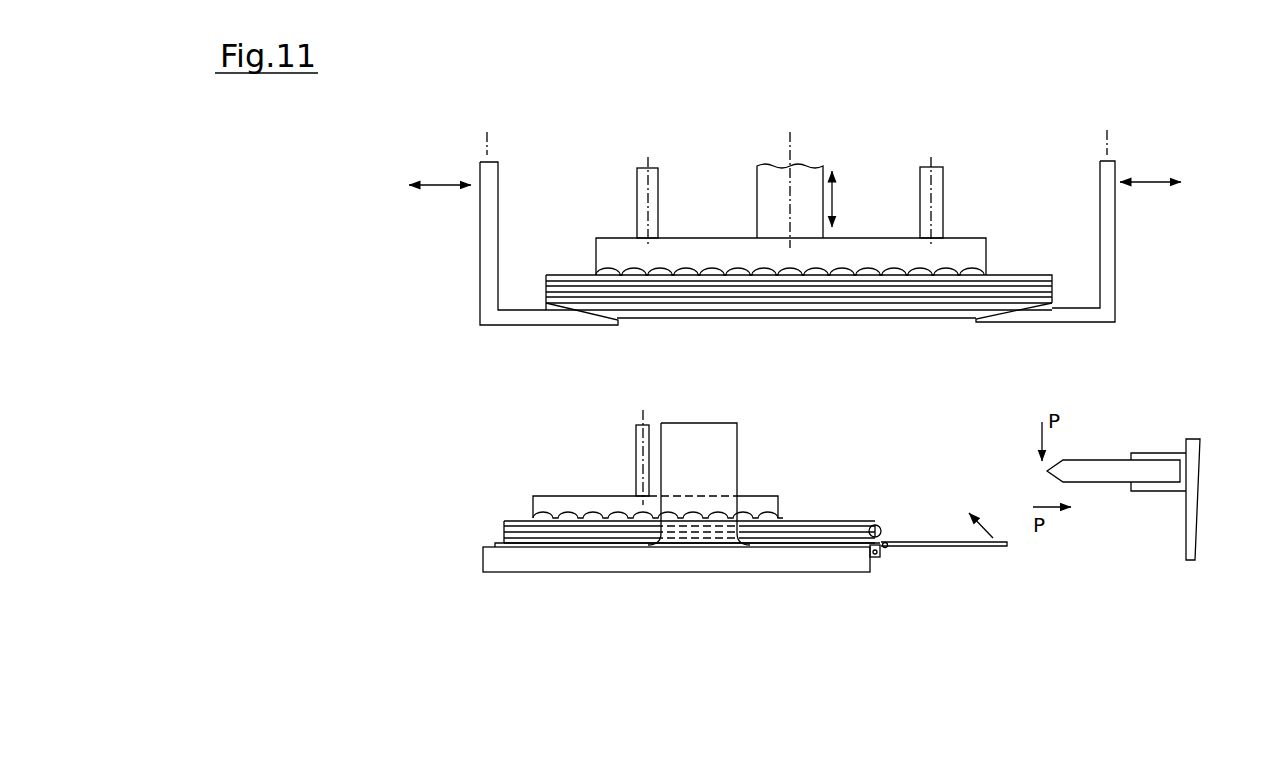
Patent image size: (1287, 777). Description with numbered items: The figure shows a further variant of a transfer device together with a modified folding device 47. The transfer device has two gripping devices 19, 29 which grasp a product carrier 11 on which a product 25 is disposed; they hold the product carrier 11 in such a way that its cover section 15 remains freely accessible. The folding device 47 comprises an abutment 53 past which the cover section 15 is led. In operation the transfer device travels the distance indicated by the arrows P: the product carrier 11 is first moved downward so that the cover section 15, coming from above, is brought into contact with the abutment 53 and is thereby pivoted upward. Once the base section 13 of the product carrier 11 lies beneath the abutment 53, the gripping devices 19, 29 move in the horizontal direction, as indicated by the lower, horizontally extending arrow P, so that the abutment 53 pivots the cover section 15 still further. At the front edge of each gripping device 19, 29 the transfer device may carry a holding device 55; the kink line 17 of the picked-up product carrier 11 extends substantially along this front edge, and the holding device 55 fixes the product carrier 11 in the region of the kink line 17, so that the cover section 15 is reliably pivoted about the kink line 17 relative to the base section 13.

The product carrier 11 is at (939, 320).
The base section 13 is at (780, 545).
The cover section 15 is at (966, 546).
The kink line 17 is at (888, 553).
The gripping device 19 is at (1108, 266).
The product 25 is at (997, 276).
The gripping device 29 is at (487, 266).
The folding device 47 is at (1221, 452).
The abutment 53 is at (1108, 467).
The holding device 55 is at (888, 519).